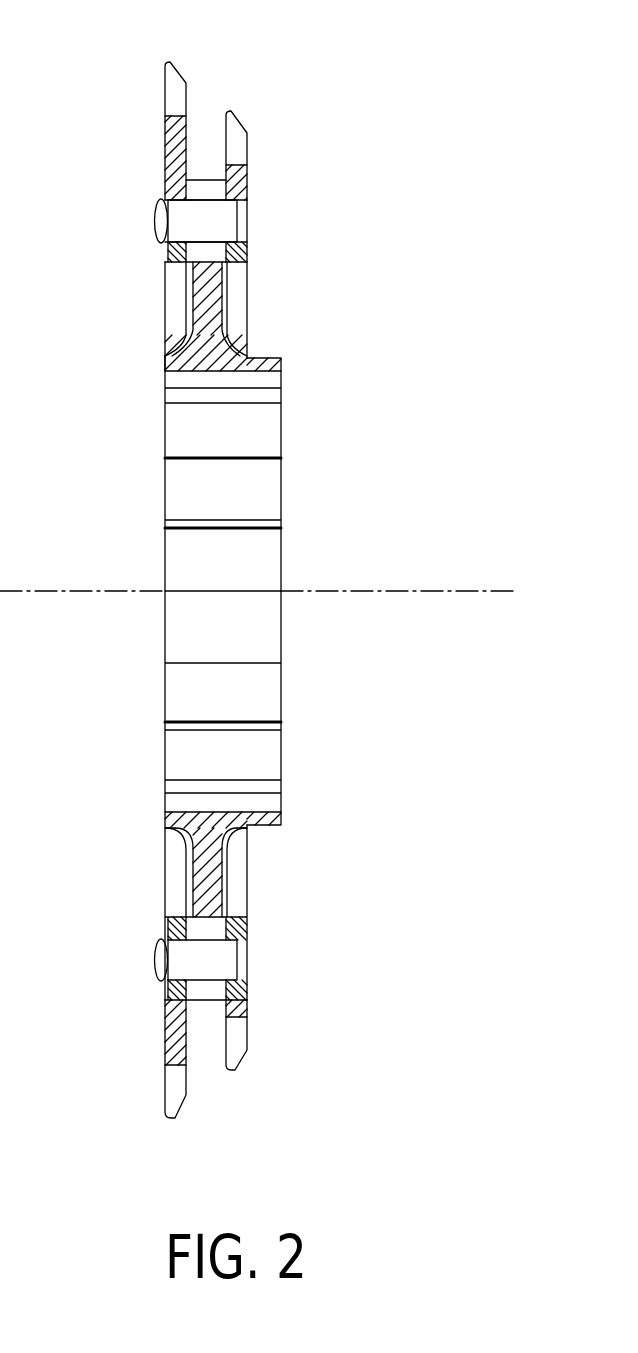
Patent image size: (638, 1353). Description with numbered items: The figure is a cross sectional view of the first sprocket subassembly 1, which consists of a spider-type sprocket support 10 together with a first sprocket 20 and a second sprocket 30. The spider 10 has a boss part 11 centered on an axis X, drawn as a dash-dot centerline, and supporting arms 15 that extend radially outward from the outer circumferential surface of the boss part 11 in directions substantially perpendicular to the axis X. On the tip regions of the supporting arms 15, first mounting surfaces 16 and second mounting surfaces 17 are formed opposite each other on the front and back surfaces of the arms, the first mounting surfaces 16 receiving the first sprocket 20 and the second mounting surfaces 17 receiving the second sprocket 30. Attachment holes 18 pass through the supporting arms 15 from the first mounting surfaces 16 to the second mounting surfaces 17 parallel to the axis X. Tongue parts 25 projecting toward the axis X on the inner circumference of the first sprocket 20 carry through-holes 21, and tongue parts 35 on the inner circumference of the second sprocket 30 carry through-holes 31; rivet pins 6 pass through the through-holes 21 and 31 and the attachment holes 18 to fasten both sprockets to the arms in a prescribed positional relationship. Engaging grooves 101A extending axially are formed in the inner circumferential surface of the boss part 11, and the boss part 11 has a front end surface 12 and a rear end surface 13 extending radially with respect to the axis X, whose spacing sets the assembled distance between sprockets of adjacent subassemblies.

The first sprocket subassembly 1 is at (273, 562).
The first sprocket 20 is at (152, 88).
The second sprocket 30 is at (250, 114).
The attachment holes 18 is at (198, 182).
The first mounting surfaces 16 is at (170, 182).
The second mounting surfaces 17 is at (240, 186).
The through-holes 21 is at (160, 222).
The rivet pins 6 is at (163, 246).
The tongue parts 25 is at (165, 265).
The through-holes 31 is at (247, 246).
The supporting arms 15 is at (186, 322).
The tongue parts 35 is at (247, 300).
The spider-type sprocket support 10 is at (300, 356).
The boss part 11 is at (165, 363).
The engaging grooves 101A is at (217, 373).
The axis X is at (493, 590).
The front end surface 12 is at (165, 815).
The rear end surface 13 is at (282, 824).